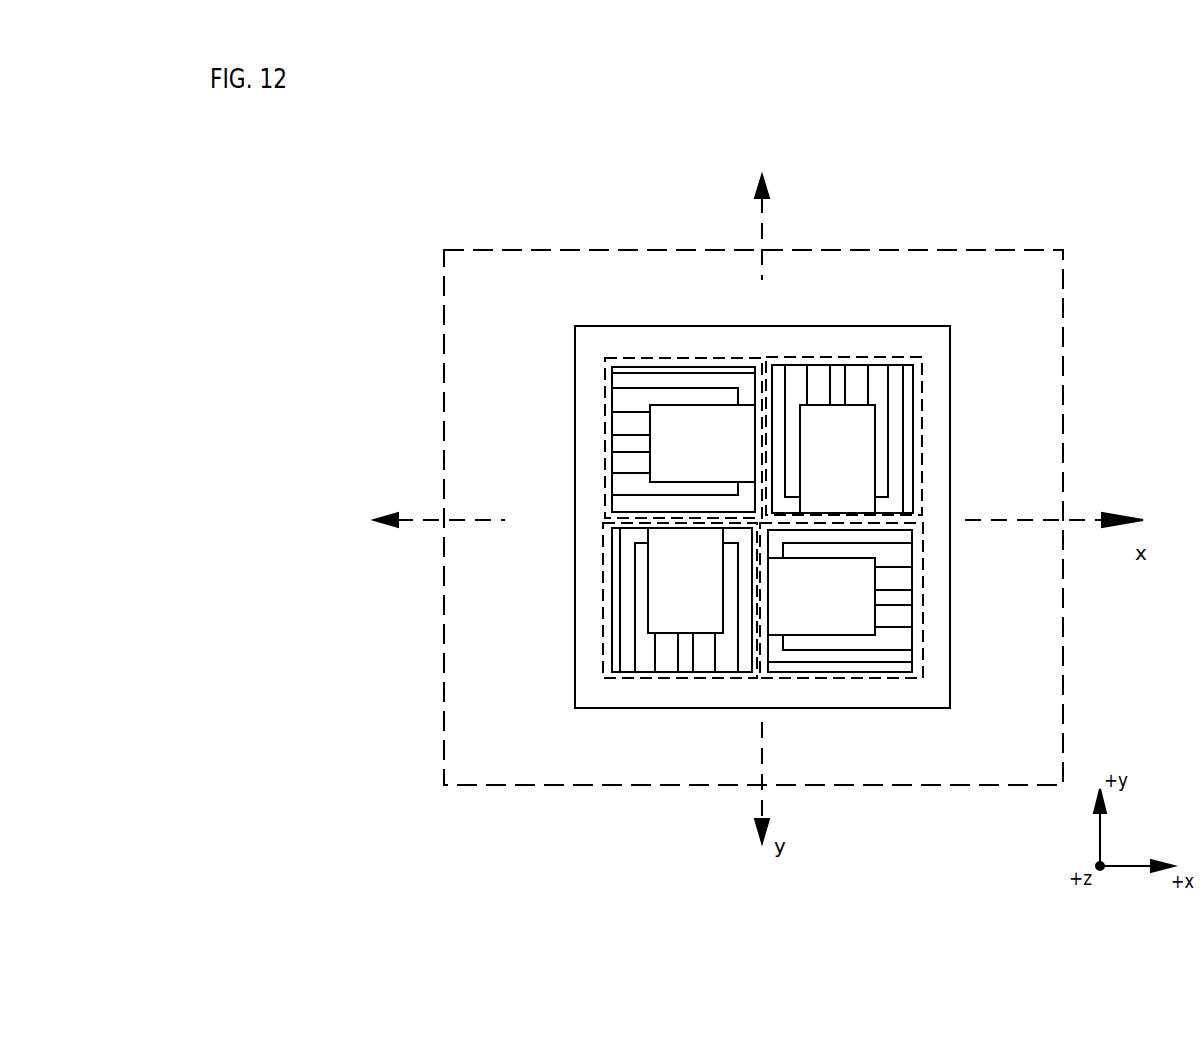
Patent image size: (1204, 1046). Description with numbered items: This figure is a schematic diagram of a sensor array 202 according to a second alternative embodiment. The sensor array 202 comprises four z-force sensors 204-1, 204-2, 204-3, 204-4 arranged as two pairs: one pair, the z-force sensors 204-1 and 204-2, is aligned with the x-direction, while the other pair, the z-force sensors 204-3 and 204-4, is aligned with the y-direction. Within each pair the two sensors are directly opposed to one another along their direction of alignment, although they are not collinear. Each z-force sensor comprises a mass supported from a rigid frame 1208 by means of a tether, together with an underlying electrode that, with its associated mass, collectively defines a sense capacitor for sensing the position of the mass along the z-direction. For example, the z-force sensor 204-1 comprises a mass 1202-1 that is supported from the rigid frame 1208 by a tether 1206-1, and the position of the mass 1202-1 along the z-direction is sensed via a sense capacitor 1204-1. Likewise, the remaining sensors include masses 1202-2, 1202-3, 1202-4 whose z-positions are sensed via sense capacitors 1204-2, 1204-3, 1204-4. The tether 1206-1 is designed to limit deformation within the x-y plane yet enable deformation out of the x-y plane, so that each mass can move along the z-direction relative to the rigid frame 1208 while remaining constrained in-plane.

The sensor array 202 is at (485, 284).
The z-force sensor 204-1 is at (640, 406).
The z-force sensor 204-2 is at (862, 634).
The z-force sensor 204-3 is at (865, 405).
The z-force sensor 204-4 is at (665, 633).
The mass 1202-1 is at (702, 443).
The mass 1202-2 is at (821, 596).
The mass 1202-3 is at (837, 459).
The mass 1202-4 is at (685, 580).
The sense capacitor 1204-1 is at (735, 440).
The sense capacitor 1204-2 is at (852, 594).
The sense capacitor 1204-3 is at (870, 456).
The sense capacitor 1204-4 is at (720, 577).
The tether 1206-1 is at (621, 504).
The rigid frame 1208 is at (713, 517).